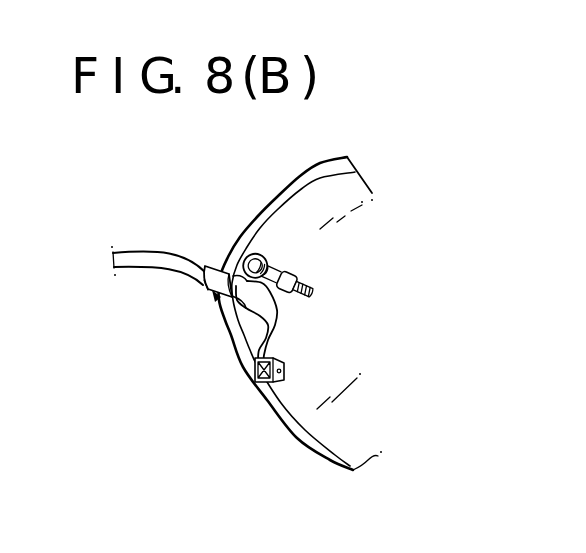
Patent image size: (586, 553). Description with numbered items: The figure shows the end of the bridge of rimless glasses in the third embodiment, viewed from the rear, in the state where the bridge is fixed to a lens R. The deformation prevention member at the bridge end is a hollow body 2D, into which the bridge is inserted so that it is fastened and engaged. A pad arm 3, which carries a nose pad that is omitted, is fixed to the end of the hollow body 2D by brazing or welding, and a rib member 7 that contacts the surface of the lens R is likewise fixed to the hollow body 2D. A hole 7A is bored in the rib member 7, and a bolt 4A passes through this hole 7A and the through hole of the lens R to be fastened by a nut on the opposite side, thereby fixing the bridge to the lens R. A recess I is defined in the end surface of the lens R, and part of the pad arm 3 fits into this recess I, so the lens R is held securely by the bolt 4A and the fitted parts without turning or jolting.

The pad arm 3 is at (145, 250).
The rib member 7 is at (284, 306).
The hole 7A is at (278, 270).
The bolt 4A is at (311, 277).
The hollow body 2D is at (205, 292).
The recess I is at (222, 293).
The lens R is at (371, 422).